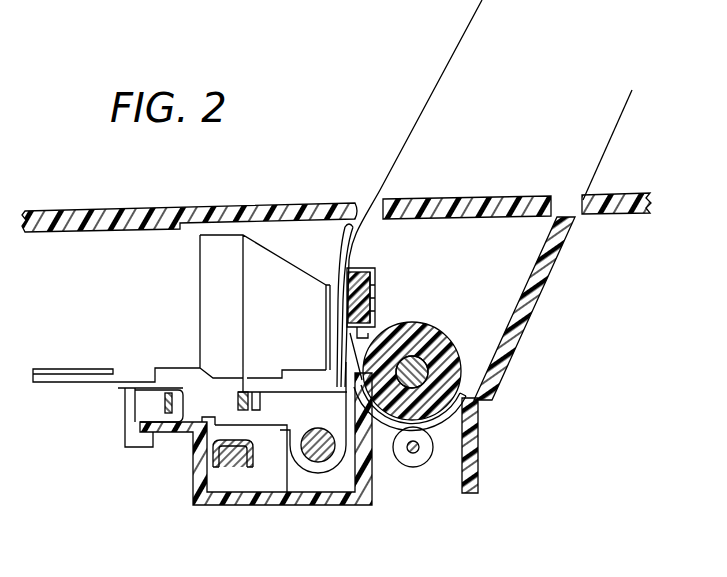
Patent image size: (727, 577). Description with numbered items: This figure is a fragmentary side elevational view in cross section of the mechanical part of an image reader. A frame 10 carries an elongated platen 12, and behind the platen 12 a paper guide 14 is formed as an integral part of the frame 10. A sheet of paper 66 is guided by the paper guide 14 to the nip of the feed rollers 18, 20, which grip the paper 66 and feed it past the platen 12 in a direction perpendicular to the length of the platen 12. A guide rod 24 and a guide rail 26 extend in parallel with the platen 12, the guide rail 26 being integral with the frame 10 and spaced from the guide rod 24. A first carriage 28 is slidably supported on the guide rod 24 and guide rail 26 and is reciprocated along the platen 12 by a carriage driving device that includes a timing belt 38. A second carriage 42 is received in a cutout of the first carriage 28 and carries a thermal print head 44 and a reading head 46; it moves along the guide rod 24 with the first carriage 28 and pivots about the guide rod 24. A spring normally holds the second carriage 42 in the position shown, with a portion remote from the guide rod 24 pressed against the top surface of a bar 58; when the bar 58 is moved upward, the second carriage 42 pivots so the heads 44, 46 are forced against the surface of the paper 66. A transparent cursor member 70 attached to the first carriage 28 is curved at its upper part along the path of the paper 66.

The sheet of paper 66 is at (437, 78).
The cursor member 70 is at (342, 238).
The reading head 46 is at (278, 266).
The thermal print head 44 is at (327, 287).
The platen 12 is at (366, 296).
The feed roller 18 is at (440, 346).
The paper guide 14 is at (553, 275).
The timing belt 38 is at (165, 405).
The guide rail 26 is at (170, 435).
The first carriage 28 is at (192, 413).
The second carriage 42 is at (227, 432).
The frame 10 is at (220, 500).
The bar 58 is at (250, 457).
The guide rod 24 is at (318, 462).
The feed roller 20 is at (418, 467).